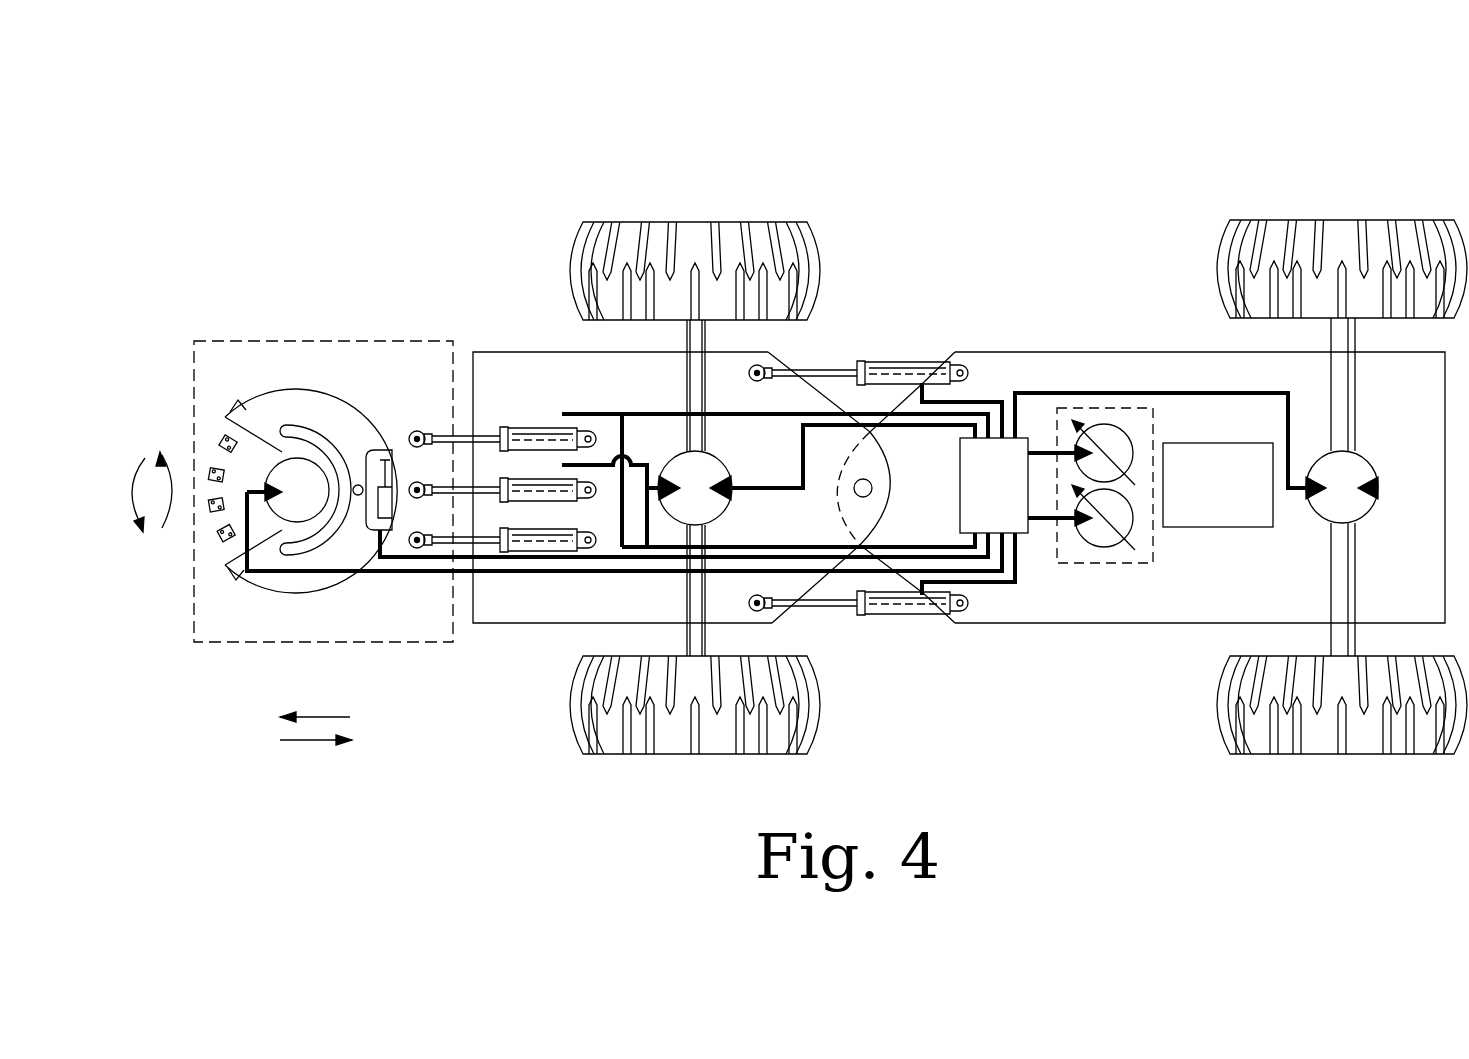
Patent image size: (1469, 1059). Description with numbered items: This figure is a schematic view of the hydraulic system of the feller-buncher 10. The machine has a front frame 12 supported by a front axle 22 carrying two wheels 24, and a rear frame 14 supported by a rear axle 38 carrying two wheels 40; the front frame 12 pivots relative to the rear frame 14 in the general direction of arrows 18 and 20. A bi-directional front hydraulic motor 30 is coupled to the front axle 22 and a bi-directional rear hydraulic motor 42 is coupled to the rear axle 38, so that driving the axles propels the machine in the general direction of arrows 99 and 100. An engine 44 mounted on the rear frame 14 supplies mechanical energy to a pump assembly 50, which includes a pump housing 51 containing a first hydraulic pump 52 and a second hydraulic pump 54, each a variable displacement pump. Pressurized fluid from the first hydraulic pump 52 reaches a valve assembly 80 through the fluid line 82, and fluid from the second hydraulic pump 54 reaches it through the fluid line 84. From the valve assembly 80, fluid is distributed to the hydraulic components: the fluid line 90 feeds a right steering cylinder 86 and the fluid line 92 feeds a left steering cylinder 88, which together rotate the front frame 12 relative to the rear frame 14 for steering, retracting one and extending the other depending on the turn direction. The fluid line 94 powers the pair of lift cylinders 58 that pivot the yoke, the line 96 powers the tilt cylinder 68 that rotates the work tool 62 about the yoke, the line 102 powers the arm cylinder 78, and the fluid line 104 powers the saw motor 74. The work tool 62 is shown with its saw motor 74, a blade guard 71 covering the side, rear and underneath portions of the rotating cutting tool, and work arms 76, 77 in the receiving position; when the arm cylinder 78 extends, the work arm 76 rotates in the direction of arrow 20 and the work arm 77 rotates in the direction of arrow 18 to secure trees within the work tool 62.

The feller-buncher 10 is at (325, 182).
The front frame 12 is at (520, 352).
The rear frame 14 is at (1145, 352).
The arrow 18 is at (145, 458).
The arrow 20 is at (178, 510).
The front axle 22 is at (688, 338).
The wheels 24 is at (650, 222).
The front hydraulic motor 30 is at (715, 462).
The rear axle 38 is at (1352, 580).
The wheels 40 is at (1375, 218).
The rear hydraulic motor 42 is at (1358, 465).
The engine 44 is at (1222, 527).
The pump assembly 50 is at (1112, 380).
The pump housing 51 is at (1060, 400).
The first hydraulic pump 52 is at (1105, 535).
The second hydraulic pump 54 is at (1108, 435).
The lift cylinders 58 is at (533, 430).
The work tool 62 is at (395, 340).
The tilt cylinder 68 is at (540, 487).
The blade guard 71 is at (245, 413).
The saw motor 74 is at (297, 462).
The work arm 76 is at (340, 535).
The work arm 77 is at (342, 447).
The arm cylinder 78 is at (392, 485).
The valve assembly 80 is at (960, 490).
The fluid line 82 is at (1038, 520).
The fluid line 84 is at (1045, 453).
The right steering cylinder 86 is at (895, 364).
The left steering cylinder 88 is at (905, 615).
The fluid line 90 is at (988, 400).
The fluid line 92 is at (990, 584).
The fluid line 94 is at (640, 412).
The line 96 is at (795, 545).
The arrow 99 is at (302, 742).
The arrow 100 is at (318, 715).
The line 102 is at (640, 550).
The fluid line 104 is at (562, 572).